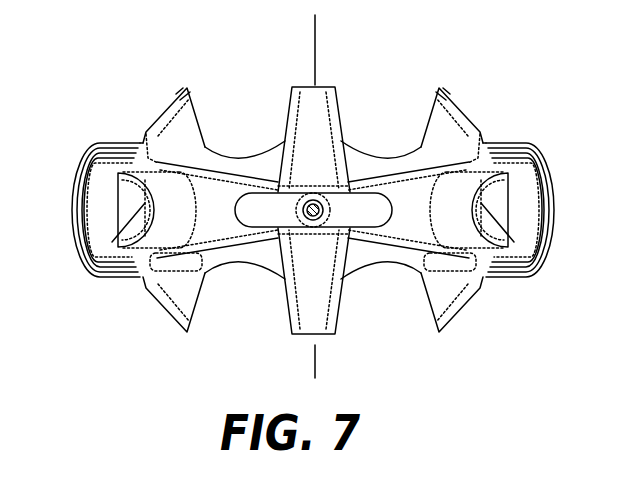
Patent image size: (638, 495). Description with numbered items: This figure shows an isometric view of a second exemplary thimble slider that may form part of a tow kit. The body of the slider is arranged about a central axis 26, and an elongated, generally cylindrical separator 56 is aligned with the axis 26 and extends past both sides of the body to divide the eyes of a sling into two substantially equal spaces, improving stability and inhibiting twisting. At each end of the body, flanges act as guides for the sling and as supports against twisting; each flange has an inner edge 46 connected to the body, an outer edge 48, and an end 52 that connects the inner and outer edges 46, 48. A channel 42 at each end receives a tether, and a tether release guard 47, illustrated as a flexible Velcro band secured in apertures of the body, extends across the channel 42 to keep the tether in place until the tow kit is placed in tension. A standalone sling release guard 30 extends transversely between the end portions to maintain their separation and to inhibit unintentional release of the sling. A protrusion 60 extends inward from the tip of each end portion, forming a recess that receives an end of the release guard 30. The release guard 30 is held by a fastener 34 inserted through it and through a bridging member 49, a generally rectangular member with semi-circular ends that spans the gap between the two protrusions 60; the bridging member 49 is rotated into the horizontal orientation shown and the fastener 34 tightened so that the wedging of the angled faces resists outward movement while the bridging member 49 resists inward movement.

The axis 26 is at (320, 42).
The sling release guard 30 is at (335, 230).
The fastener 34 is at (319, 202).
The channel 42 is at (115, 237).
The inner edge 46 is at (160, 158).
The tether release guard 47 is at (90, 210).
The outer edge 48 is at (188, 87).
The bridging member 49 is at (265, 217).
The end 52 is at (143, 135).
The separator 56 is at (332, 153).
The protrusion 60 is at (217, 225).